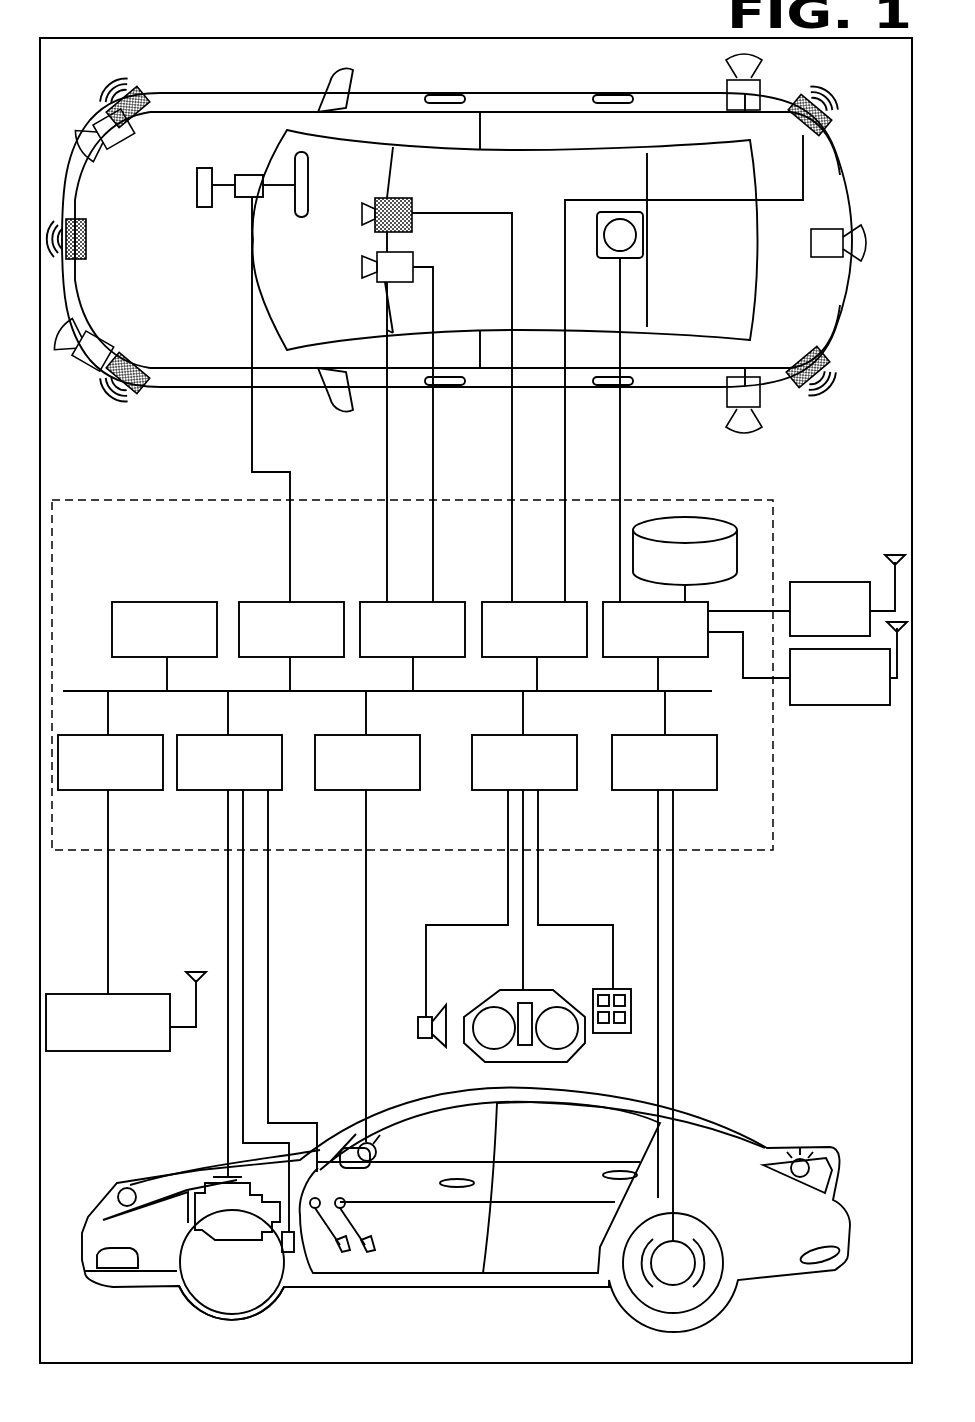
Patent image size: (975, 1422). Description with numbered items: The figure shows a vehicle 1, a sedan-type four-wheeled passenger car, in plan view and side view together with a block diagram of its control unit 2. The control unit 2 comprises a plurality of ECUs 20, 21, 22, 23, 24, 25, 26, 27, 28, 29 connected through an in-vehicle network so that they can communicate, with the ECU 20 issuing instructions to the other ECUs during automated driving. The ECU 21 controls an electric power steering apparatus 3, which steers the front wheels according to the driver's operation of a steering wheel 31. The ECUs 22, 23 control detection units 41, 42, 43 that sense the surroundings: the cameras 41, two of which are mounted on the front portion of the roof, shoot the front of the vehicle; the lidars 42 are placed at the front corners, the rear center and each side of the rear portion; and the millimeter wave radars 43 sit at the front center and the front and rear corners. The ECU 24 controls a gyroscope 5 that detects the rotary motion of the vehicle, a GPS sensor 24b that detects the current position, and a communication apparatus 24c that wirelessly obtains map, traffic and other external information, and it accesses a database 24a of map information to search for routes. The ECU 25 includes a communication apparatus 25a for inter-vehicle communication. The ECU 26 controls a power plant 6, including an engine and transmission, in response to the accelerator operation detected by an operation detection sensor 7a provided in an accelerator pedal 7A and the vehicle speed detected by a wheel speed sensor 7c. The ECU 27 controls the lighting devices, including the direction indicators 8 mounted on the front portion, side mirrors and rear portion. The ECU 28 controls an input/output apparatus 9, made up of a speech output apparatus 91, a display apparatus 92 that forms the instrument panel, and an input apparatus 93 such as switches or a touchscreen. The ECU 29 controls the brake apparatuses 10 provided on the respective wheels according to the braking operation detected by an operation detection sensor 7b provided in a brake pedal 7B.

The vehicle 1 is at (850, 150).
The control unit 2 is at (771, 851).
The electric power steering apparatus 3 is at (204, 210).
The steering wheel 31 is at (302, 218).
The cameras 41 is at (415, 222).
The lidars 42 is at (115, 160).
The millimeter wave radars 43 is at (138, 130).
The gyroscope 5 is at (645, 235).
The power plant 6 is at (200, 1180).
The operation detection sensor 7a is at (340, 1142).
The operation detection sensor 7b is at (345, 1198).
The accelerator pedal 7A is at (347, 1243).
The brake pedal 7B is at (370, 1232).
The wheel speed sensor 7c is at (290, 1253).
The direction indicators 8 is at (118, 1192).
The input/output apparatus 9 is at (446, 1068).
The speech output apparatus 91 is at (418, 1025).
The display apparatus 92 is at (480, 1002).
The input apparatus 93 is at (612, 1034).
The brake apparatuses 10 is at (675, 1285).
The ECU 20 is at (196, 600).
The ECU 21 is at (321, 600).
The ECU 22 is at (418, 600).
The ECU 23 is at (538, 600).
The ECU 24 is at (606, 600).
The database 24a is at (684, 516).
The GPS sensor 24b is at (847, 580).
The communication apparatus 24c is at (843, 706).
The ECU 25 is at (137, 792).
The communication apparatus 25a is at (100, 1052).
The ECU 26 is at (205, 792).
The ECU 27 is at (397, 792).
The ECU 28 is at (563, 792).
The ECU 29 is at (700, 792).